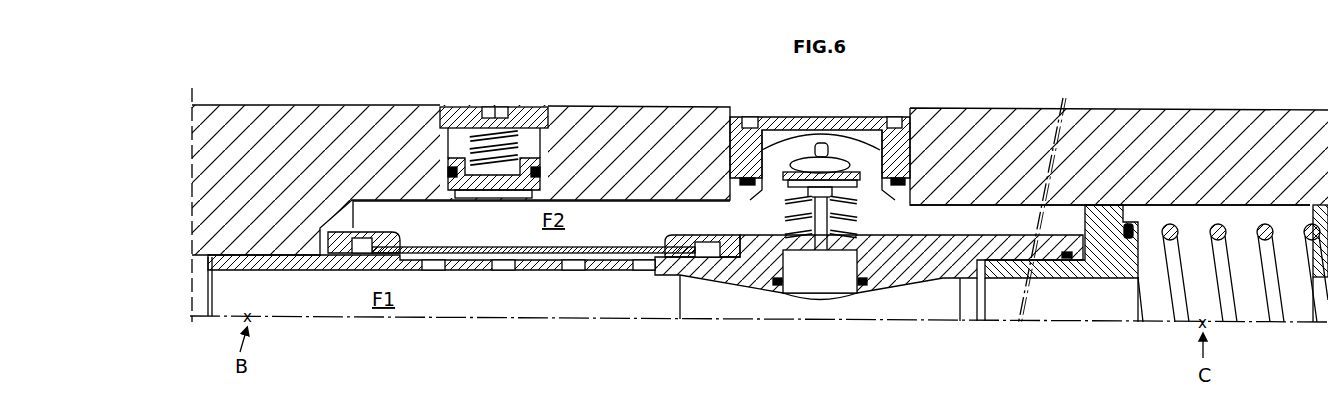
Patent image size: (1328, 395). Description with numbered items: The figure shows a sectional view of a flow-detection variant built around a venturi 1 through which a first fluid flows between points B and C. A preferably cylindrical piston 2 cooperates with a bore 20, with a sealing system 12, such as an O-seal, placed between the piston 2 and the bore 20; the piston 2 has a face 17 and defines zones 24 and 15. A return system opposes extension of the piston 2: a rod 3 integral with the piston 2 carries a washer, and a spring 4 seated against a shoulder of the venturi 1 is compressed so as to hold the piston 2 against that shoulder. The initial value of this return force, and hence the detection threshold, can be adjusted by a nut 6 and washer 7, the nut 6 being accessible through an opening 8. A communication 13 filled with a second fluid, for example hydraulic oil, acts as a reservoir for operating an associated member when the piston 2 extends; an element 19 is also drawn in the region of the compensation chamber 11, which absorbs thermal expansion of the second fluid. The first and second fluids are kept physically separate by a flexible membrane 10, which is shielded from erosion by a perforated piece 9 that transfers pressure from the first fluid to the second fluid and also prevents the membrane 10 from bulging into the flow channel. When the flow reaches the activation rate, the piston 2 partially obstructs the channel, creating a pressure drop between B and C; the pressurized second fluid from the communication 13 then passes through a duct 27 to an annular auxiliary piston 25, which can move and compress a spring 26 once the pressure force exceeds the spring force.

The venturi 1 is at (943, 278).
The piston 2 is at (818, 270).
The rod 3 is at (785, 207).
The spring 4 is at (884, 160).
The nut 6 is at (813, 145).
The washer 7 is at (782, 163).
The opening 8 is at (768, 140).
The perforated piece 9 is at (543, 275).
The flexible membrane 10 is at (453, 246).
The compensation chamber 11 is at (453, 147).
The sealing system 12 is at (773, 292).
The communication 13 is at (541, 216).
The zone 15 is at (857, 207).
The piston face 17 is at (812, 298).
The piston 19 is at (538, 170).
The bore 20 is at (753, 290).
The zone 24 is at (847, 307).
The auxiliary piston 25 is at (1098, 203).
The spring 26 is at (1175, 225).
The duct 27 is at (1005, 223).